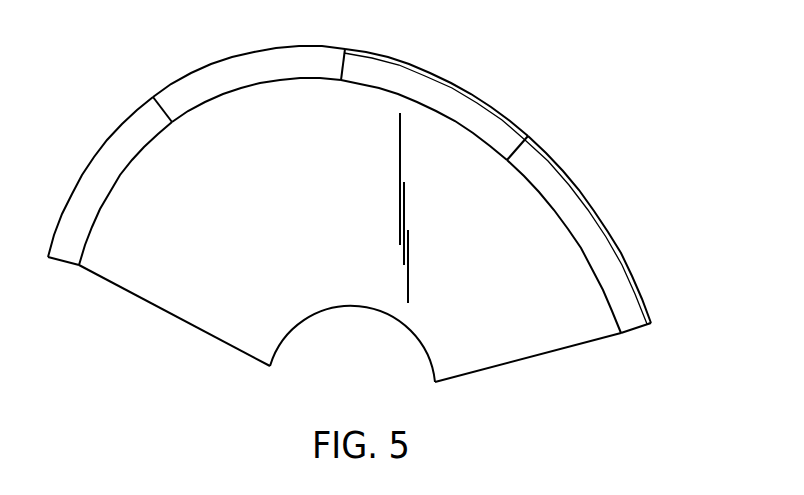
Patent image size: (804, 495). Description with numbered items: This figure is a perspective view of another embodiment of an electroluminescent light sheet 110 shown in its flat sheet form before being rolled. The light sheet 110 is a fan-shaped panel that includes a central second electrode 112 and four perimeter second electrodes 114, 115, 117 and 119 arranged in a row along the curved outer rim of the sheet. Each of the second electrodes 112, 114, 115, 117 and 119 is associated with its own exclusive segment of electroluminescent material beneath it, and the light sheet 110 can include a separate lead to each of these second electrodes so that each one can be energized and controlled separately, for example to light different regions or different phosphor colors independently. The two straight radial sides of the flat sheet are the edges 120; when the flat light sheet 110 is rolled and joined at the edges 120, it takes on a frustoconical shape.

The electroluminescent light sheet 110 is at (602, 160).
The central second electrode 112 is at (218, 312).
The perimeter second electrode 114 is at (127, 147).
The perimeter second electrode 115 is at (238, 72).
The perimeter second electrode 117 is at (463, 93).
The perimeter second electrode 119 is at (598, 240).
The edges 120 is at (155, 310).